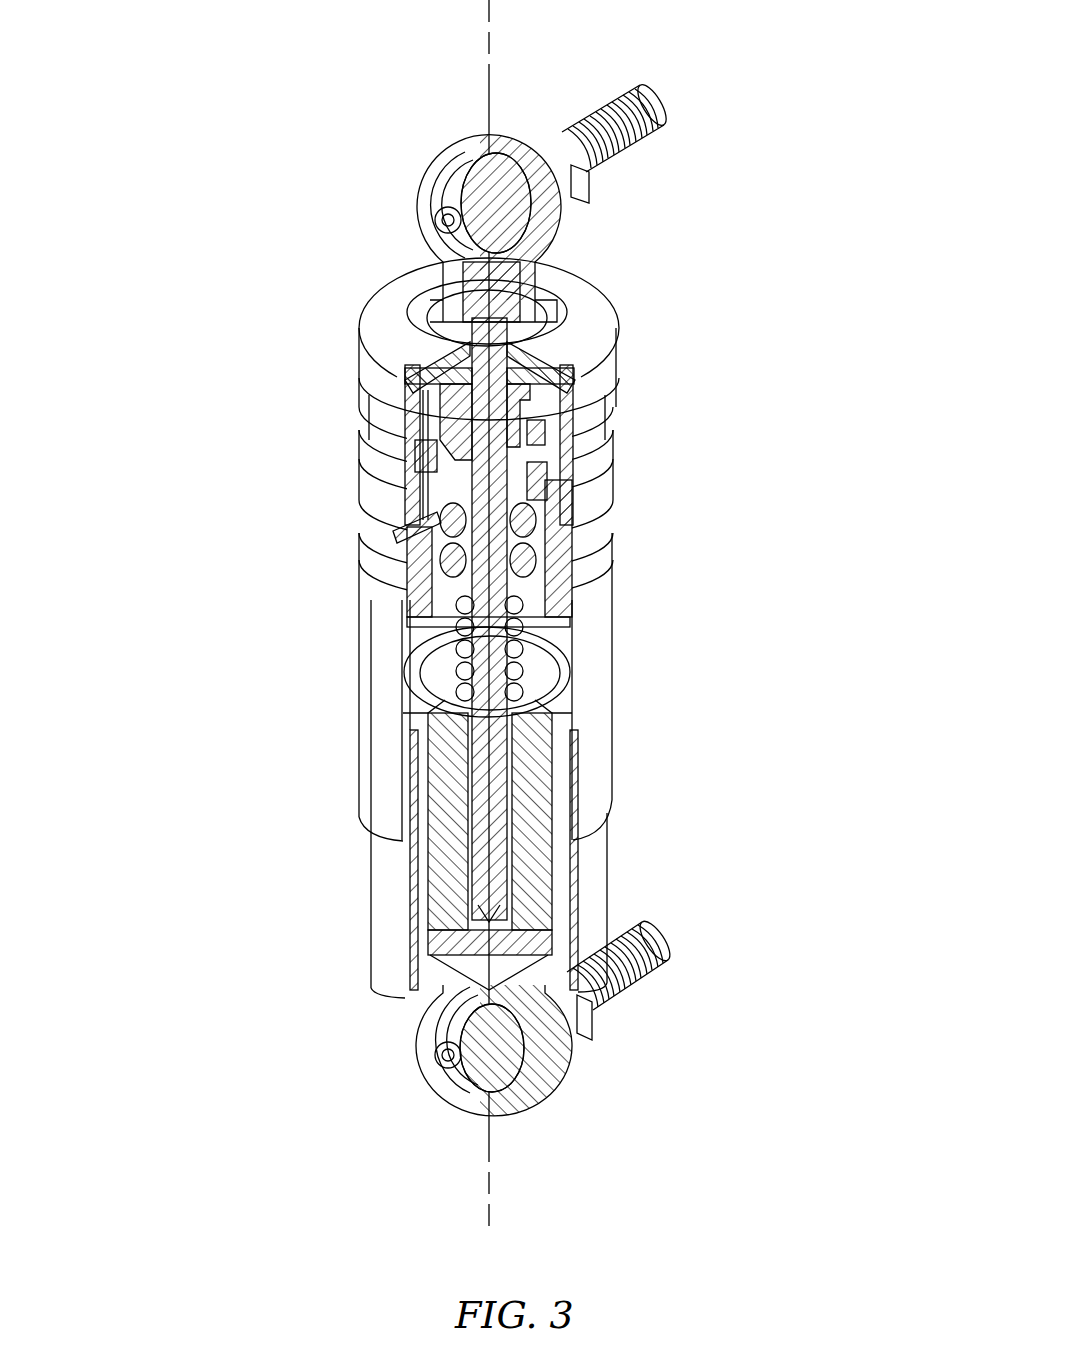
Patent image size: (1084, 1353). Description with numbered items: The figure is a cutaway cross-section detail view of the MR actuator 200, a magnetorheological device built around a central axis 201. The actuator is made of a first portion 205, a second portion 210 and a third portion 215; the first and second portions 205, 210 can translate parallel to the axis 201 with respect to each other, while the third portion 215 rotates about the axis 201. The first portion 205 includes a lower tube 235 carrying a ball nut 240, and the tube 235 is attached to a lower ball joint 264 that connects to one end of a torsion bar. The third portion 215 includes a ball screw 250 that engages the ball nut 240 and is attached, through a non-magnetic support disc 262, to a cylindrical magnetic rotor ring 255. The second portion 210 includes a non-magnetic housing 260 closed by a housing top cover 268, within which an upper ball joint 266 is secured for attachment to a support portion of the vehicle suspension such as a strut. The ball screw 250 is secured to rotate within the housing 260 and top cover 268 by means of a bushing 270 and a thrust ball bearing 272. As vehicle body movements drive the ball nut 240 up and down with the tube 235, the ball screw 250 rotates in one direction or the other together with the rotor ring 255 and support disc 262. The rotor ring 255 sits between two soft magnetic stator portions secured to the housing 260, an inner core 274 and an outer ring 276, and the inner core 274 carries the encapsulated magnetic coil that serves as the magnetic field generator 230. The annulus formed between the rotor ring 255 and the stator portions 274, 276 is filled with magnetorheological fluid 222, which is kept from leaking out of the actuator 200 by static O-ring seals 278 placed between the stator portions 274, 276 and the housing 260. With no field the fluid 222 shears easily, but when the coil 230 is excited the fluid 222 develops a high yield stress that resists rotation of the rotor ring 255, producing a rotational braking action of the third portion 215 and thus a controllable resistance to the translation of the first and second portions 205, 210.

The MR actuator 200 is at (779, 37).
The axis 201 is at (489, 1222).
The first portion 205 is at (618, 900).
The second portion 210 is at (618, 760).
The third portion 215 is at (526, 660).
The magnetorheological fluid 222 is at (540, 467).
The magnetic field generator 230 is at (432, 442).
The tube 235 is at (440, 921).
The ball nut 240 is at (437, 680).
The ball screw 250 is at (480, 784).
The magnetic rotor ring 255 is at (420, 460).
The housing 260 is at (618, 490).
The support disc 262 is at (447, 352).
The lower ball joint 264 is at (512, 1062).
The upper ball joint 266 is at (556, 196).
The housing top cover 268 is at (590, 270).
The bushing 270 is at (470, 332).
The thrust ball bearing 272 is at (405, 560).
The inner core 274 is at (575, 485).
The outer ring 276 is at (612, 403).
The static O-ring seals 278 is at (531, 575).